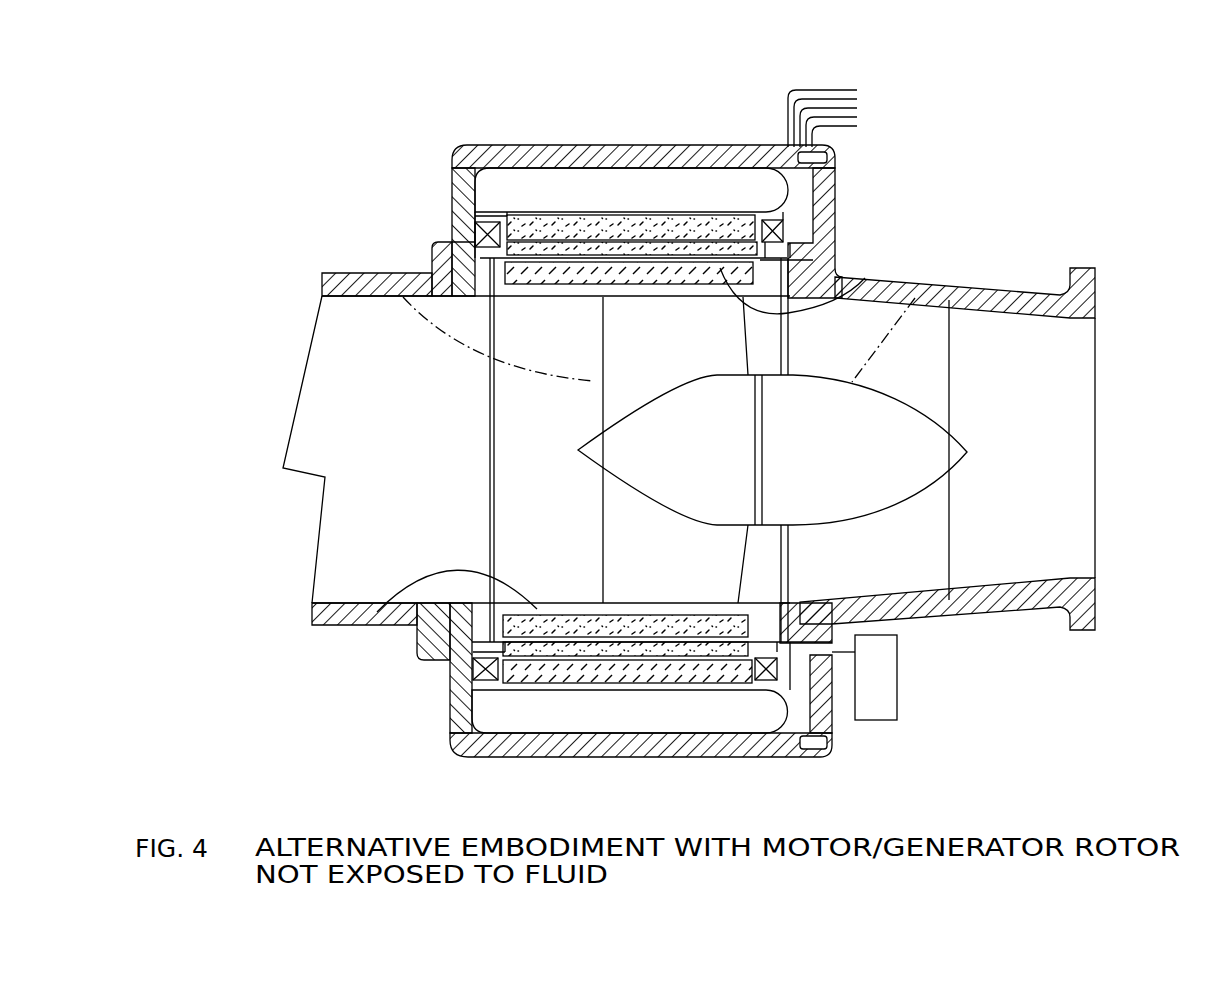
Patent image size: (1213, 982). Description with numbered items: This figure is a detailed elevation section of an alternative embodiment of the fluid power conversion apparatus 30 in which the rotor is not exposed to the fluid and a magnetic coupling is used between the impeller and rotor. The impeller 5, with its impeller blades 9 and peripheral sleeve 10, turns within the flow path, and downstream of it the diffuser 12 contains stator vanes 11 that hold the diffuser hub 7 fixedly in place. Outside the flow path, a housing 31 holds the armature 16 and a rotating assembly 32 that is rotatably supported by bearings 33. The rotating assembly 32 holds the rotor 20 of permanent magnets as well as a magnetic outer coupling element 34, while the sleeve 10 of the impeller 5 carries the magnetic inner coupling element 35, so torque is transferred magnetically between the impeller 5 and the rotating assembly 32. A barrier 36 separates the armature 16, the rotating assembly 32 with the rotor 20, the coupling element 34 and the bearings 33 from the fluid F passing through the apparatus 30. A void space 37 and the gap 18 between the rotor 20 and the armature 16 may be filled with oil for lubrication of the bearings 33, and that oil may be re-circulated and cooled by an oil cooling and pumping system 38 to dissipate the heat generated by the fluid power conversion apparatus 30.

The impeller 5 is at (396, 284).
The diffuser hub 7 is at (978, 275).
The impeller blades 9 is at (665, 373).
The peripheral sleeve 10 is at (385, 603).
The stator vanes 11 is at (852, 353).
The diffuser 12 is at (918, 278).
The armature 16 is at (650, 203).
The gap 18 is at (513, 690).
The rotor 20 is at (535, 213).
The fluid power conversion apparatus 30 is at (672, 380).
The housing 31 is at (607, 147).
The rotating assembly 32 is at (443, 245).
The bearings 33 is at (835, 203).
The magnetic outer coupling element 34 is at (688, 243).
The magnetic inner coupling element 35 is at (870, 275).
The barrier 36 is at (835, 222).
The void space 37 is at (455, 228).
The oil cooling and pumping system 38 is at (893, 693).
The fluid F is at (1032, 460).